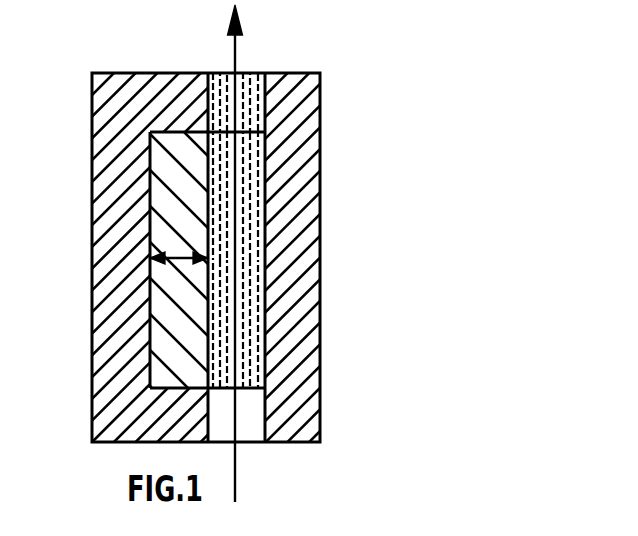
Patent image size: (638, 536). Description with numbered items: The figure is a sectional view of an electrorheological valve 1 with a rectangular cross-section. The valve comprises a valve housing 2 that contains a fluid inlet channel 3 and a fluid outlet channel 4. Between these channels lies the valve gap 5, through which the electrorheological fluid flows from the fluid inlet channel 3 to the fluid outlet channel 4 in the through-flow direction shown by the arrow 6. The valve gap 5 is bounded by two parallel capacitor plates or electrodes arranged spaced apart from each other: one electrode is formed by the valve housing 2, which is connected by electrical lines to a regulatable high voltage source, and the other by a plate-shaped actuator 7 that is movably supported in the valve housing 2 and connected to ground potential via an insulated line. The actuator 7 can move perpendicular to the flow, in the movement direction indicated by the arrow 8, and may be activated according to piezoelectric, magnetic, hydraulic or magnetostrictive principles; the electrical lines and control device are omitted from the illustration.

The electrorheological valve 1 is at (492, 77).
The valve housing 2 is at (115, 98).
The fluid inlet channel 3 is at (251, 423).
The fluid outlet channel 4 is at (256, 89).
The valve gap 5 is at (247, 178).
The arrow 6 is at (237, 300).
The plate-shaped actuator 7 is at (163, 178).
The arrow 8 is at (182, 270).